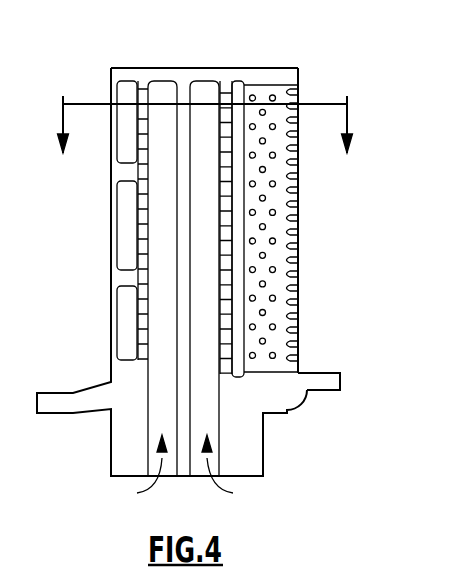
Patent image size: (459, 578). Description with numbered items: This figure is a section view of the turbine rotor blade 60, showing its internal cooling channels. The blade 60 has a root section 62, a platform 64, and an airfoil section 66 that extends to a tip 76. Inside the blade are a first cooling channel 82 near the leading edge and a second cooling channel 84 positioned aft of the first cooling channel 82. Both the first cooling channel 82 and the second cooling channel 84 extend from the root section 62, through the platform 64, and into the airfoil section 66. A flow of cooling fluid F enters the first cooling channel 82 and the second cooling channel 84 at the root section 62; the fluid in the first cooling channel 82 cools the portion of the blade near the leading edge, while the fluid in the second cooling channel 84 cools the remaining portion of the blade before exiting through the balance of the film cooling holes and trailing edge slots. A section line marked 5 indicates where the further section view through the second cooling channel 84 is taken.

The section line 5- 5 is at (204, 142).
The turbine rotor blade 60 is at (360, 230).
The root section 62 is at (258, 468).
The platform 64 is at (330, 382).
The airfoil section 66 is at (118, 173).
The tip 76 is at (268, 68).
The first cooling channel 82 is at (160, 418).
The second cooling channel 84 is at (208, 417).